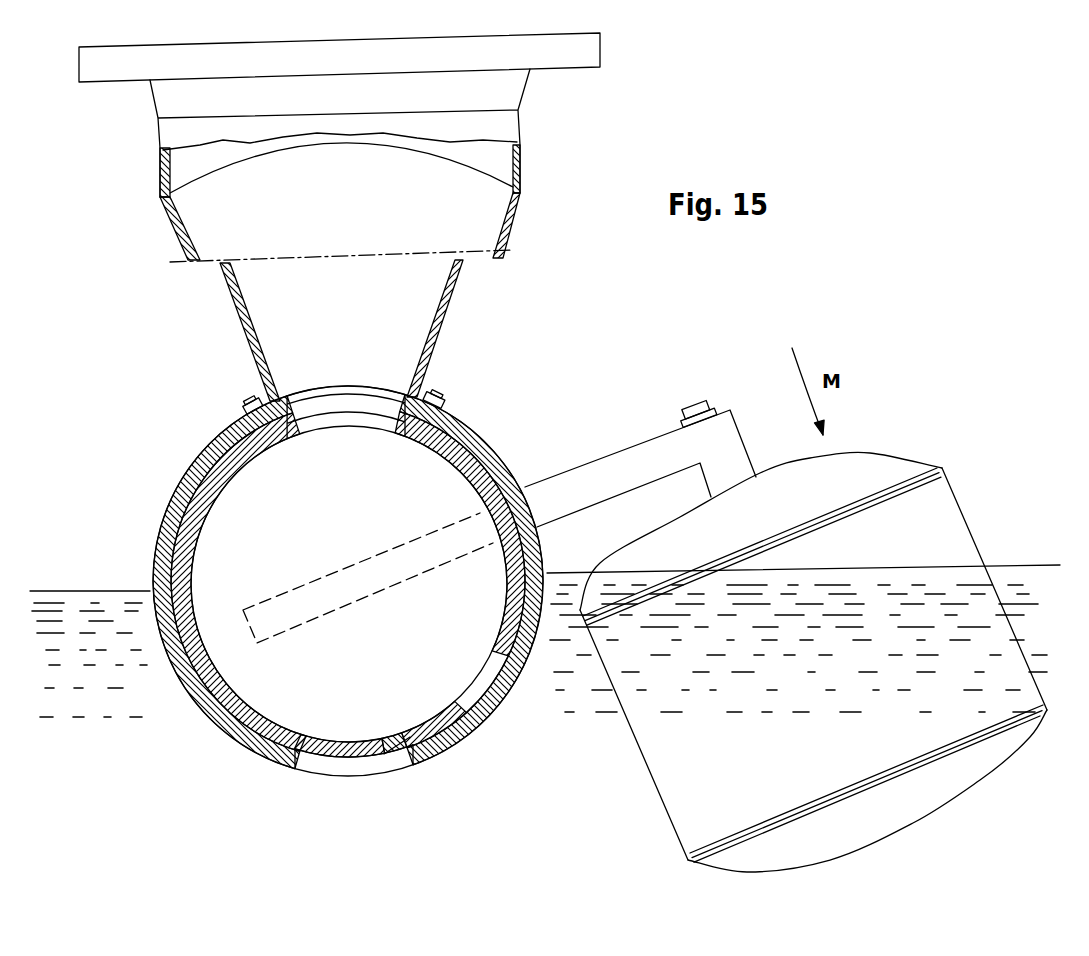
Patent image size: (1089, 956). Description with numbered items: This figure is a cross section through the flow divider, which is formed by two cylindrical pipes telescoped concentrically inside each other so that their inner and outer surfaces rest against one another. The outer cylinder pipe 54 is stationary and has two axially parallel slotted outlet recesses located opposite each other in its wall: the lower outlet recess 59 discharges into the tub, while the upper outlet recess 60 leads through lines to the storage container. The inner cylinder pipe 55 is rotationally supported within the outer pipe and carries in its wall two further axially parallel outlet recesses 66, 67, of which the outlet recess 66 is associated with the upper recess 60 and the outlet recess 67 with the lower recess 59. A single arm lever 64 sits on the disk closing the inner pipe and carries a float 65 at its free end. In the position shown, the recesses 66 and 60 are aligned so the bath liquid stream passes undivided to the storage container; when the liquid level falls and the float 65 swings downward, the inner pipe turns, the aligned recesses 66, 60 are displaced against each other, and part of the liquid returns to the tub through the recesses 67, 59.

The outer cylinder pipe 54 is at (208, 453).
The inner cylinder pipe 55 is at (463, 430).
The lower outlet recess 59 is at (352, 767).
The upper outlet recess 60 is at (315, 425).
The single arm lever 64 is at (583, 487).
The float 65 is at (703, 757).
The outlet recess of inner cylinder pipe 66 is at (363, 403).
The outlet recess of inner cylinder pipe 67 is at (460, 712).